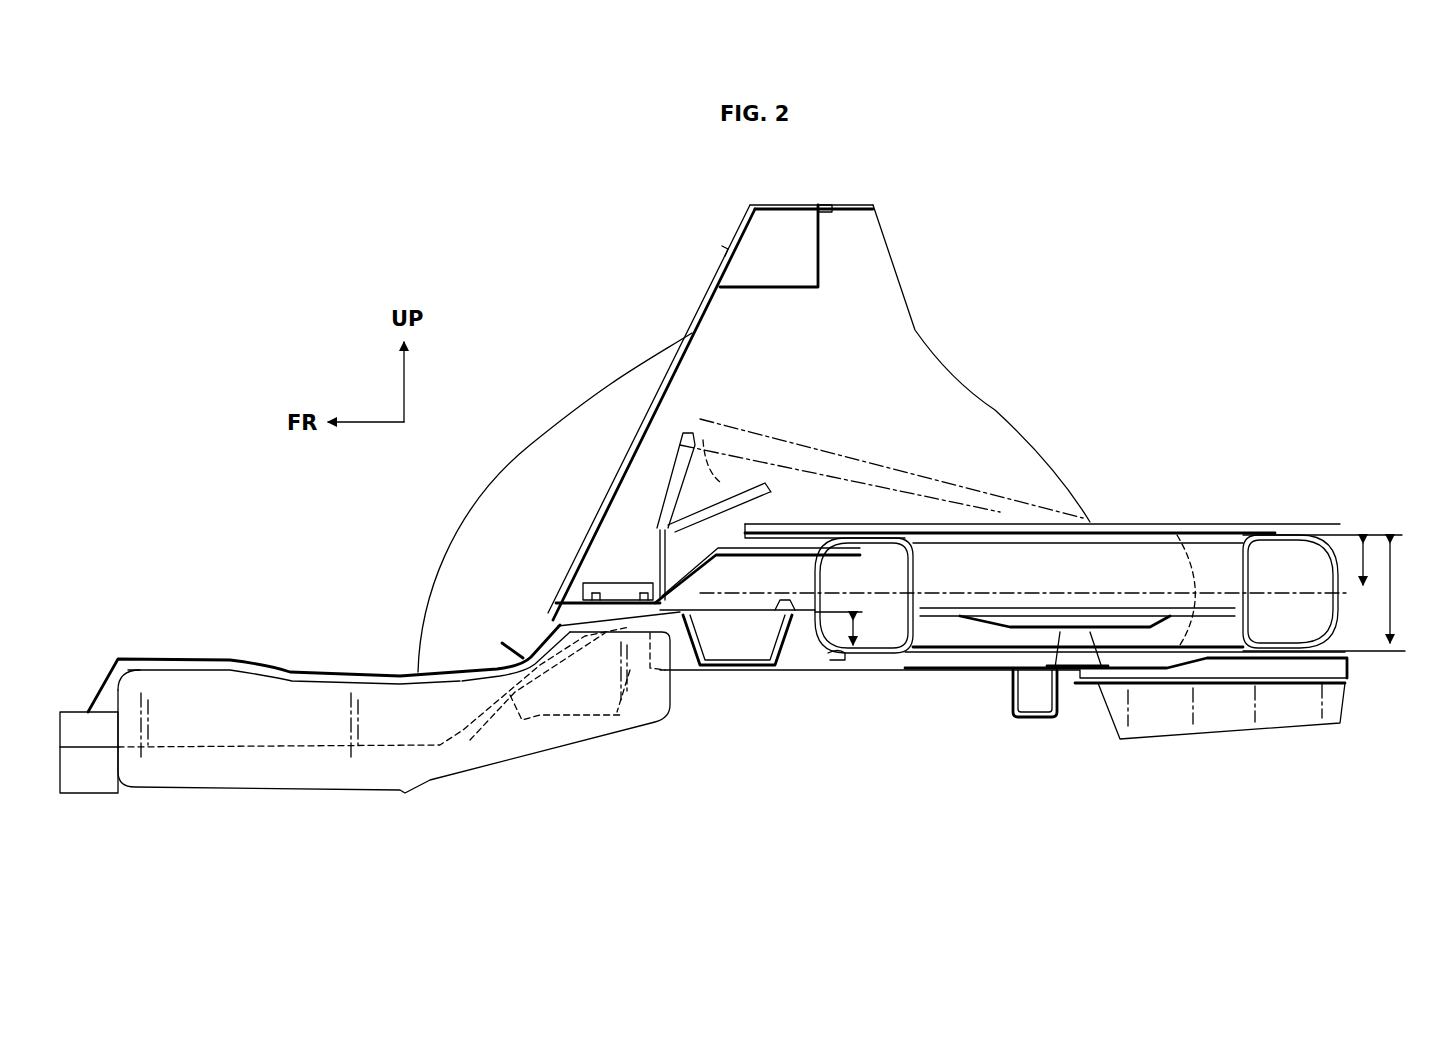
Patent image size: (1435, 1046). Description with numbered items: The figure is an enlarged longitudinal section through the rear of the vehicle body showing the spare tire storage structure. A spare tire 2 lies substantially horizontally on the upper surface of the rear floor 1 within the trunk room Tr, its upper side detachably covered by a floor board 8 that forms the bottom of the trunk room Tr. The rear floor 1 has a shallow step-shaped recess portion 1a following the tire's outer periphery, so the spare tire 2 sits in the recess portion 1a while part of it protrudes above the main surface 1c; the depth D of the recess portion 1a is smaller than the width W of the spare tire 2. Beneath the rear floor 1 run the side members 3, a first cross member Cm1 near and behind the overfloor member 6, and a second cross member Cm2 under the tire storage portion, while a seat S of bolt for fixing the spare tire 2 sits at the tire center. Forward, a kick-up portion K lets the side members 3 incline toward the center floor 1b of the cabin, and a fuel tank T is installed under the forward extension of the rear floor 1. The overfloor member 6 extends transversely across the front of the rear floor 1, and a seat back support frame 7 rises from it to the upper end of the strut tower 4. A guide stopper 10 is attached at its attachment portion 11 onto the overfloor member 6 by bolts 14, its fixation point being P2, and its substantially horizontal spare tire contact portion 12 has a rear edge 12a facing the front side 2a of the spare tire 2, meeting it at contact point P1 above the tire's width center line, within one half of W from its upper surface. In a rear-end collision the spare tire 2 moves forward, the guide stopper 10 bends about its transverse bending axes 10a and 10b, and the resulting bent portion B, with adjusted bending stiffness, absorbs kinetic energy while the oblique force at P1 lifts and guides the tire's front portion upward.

The rear floor 1 is at (820, 600).
The recess portion 1a is at (838, 660).
The center floor 1b is at (168, 658).
The main surface 1c is at (770, 612).
The spare tire 2 is at (960, 487).
The front side 2a is at (770, 438).
The side member 3 is at (908, 672).
The strut tower 4 is at (885, 287).
The overfloor member 6 is at (560, 587).
The seat back support frame 7 is at (636, 425).
The floor board 8 is at (1192, 524).
The guide stopper 10 is at (655, 474).
The bending axis 10a is at (648, 545).
The bending axis 10b is at (780, 563).
The attachment portion 11 is at (658, 595).
The spare tire contact portion 12 is at (760, 545).
The rear edge 12a is at (805, 548).
The bolt 14 is at (617, 582).
The bent portion B is at (712, 587).
The first cross member Cm1 is at (697, 663).
The second cross member Cm2 is at (1020, 700).
The depth D is at (847, 628).
The kick-up portion K is at (492, 680).
The contact point P1 is at (777, 442).
The fixation point P2 is at (630, 608).
The seat of bolt S is at (1125, 638).
The fuel tank T is at (556, 750).
The trunk room Tr is at (1063, 431).
The width W is at (1375, 702).